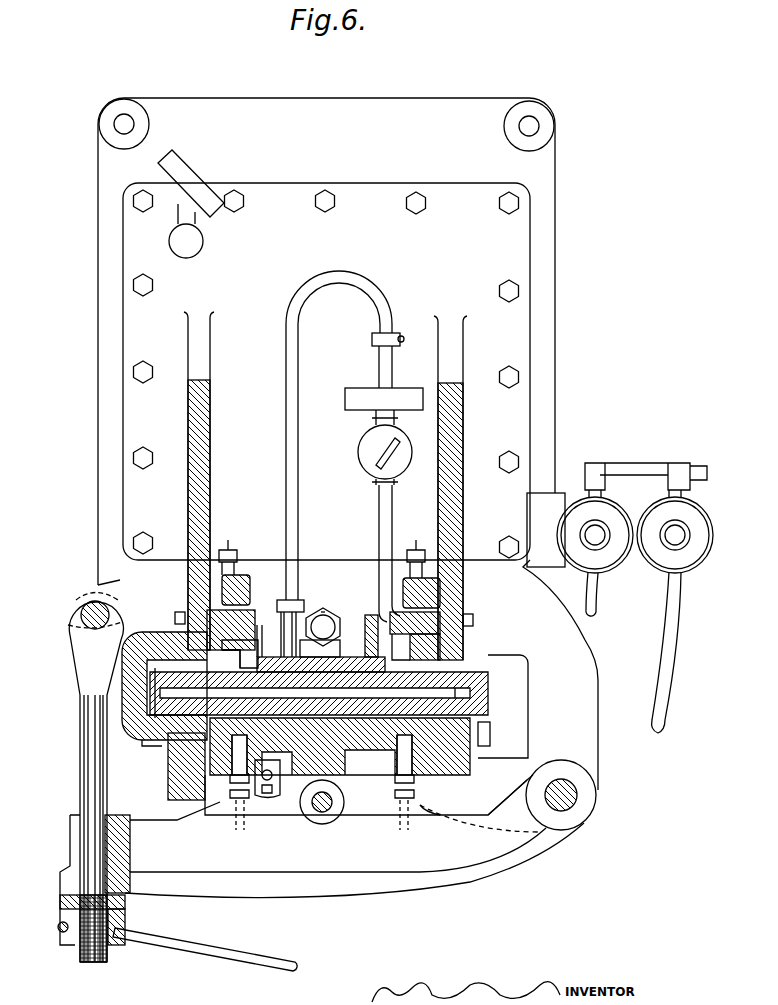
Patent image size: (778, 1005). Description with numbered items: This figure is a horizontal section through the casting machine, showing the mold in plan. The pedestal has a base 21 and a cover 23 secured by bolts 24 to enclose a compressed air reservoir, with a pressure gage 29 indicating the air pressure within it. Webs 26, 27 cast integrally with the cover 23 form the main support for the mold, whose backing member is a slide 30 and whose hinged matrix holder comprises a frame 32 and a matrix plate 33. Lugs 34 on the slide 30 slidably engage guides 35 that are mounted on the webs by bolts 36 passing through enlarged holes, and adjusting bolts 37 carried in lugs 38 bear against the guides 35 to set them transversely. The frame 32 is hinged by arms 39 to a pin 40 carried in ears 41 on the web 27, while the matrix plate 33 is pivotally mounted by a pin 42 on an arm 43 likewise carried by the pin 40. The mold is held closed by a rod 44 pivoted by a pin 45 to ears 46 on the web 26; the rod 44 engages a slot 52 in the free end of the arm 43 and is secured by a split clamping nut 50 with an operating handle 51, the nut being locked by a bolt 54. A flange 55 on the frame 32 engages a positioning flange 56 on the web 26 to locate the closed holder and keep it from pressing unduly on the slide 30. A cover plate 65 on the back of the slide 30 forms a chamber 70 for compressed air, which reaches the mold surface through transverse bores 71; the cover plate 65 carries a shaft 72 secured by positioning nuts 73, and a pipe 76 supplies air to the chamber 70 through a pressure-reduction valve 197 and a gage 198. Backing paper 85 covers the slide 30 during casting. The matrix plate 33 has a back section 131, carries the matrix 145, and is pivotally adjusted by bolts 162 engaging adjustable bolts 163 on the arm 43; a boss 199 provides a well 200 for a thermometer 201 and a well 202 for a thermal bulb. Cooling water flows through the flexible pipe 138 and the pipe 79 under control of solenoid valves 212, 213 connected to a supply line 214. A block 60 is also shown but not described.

The base 21 is at (384, 106).
The cover 23 is at (145, 326).
The bolts 24 is at (143, 213).
The web 26 is at (206, 474).
The web 27 is at (455, 446).
The pressure gage 29 is at (180, 182).
The slide 30 is at (462, 672).
The frame 32 is at (170, 766).
The matrix plate 33 is at (491, 726).
The lugs 34 is at (331, 652).
The guides 35 is at (250, 614).
The bolts 36 is at (479, 624).
The adjusting bolts 37 is at (321, 555).
The lugs 38 is at (247, 588).
The arms 39 is at (520, 774).
The pin 40 is at (566, 797).
The ears 41 is at (592, 656).
The pin 42 is at (328, 808).
The arm 43 is at (342, 890).
The rod 44 is at (86, 760).
The pin 45 is at (84, 620).
The ears 46 is at (130, 580).
The split clamping nut 50 is at (118, 946).
The operating handle 51 is at (252, 956).
The slot 52 is at (70, 852).
The bolt 54 is at (58, 927).
The flange 55 is at (134, 738).
The positioning flange 56 is at (160, 632).
The block 60 is at (339, 636).
The cover plate 65 is at (268, 640).
The chamber 70 is at (348, 664).
The transverse bores 71 is at (400, 652).
The shaft 72 is at (332, 619).
The positioning nuts 73 is at (323, 614).
The pipe 76 is at (297, 565).
The pipe 79 is at (597, 603).
The backing paper 85 is at (229, 660).
The back section 131 is at (232, 786).
The flexible pipe 138 is at (676, 644).
The matrix 145 is at (362, 780).
The bolts 162 is at (318, 765).
The adjustable bolts 163 is at (321, 824).
The pressure-reduction valve 197 is at (363, 450).
The gage 198 is at (352, 392).
The boss 199 is at (282, 779).
The well 200 is at (264, 782).
The thermometer 201 is at (270, 792).
The well 202 is at (387, 782).
The solenoid valve 212 is at (690, 507).
The solenoid valve 213 is at (612, 507).
The supply line 214 is at (638, 466).